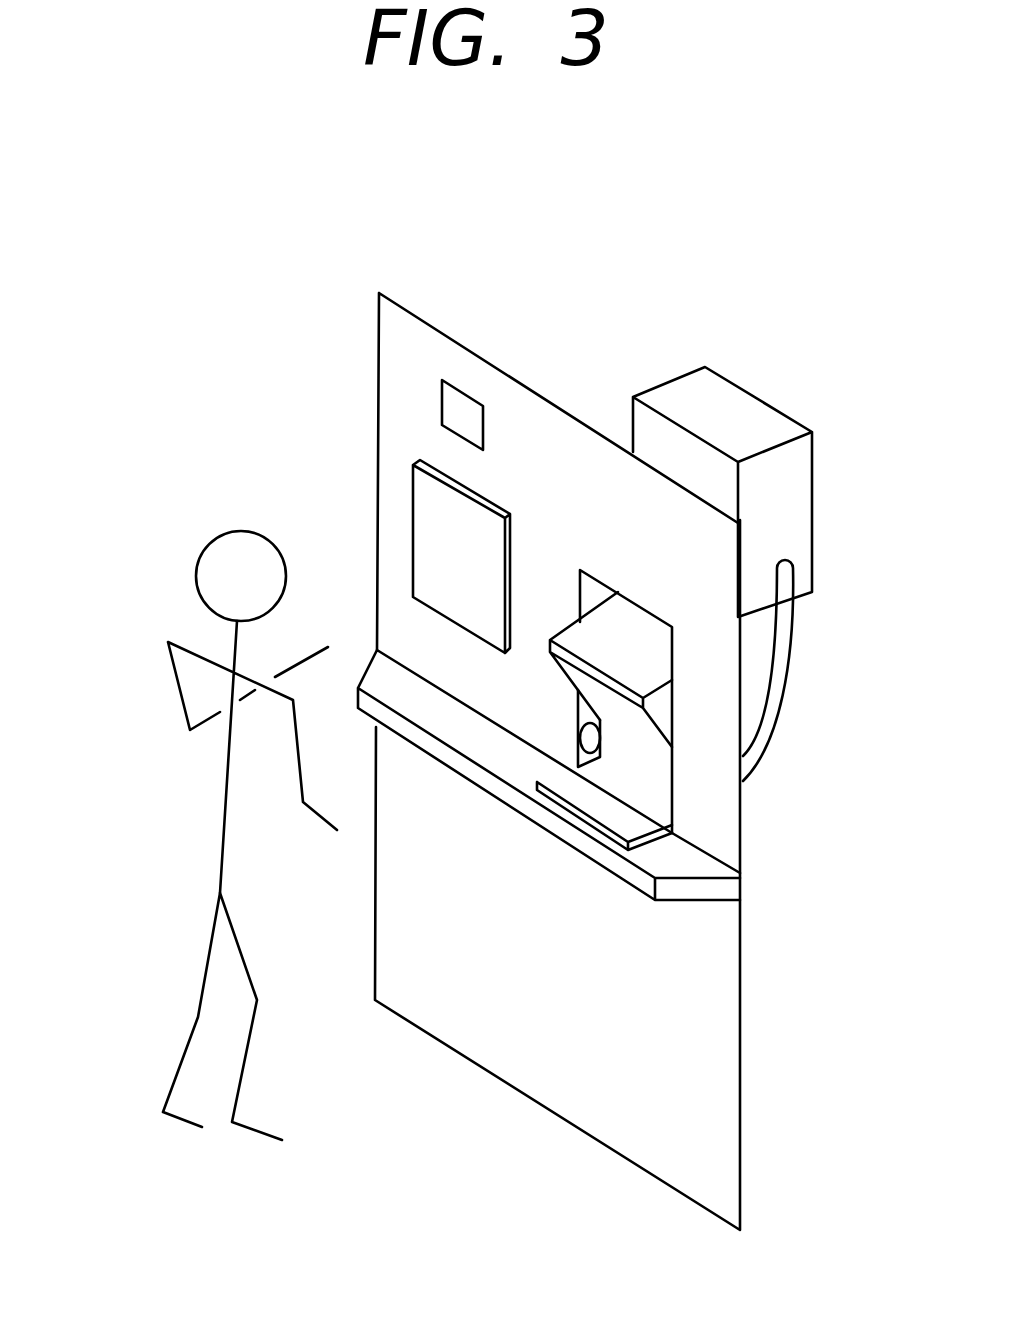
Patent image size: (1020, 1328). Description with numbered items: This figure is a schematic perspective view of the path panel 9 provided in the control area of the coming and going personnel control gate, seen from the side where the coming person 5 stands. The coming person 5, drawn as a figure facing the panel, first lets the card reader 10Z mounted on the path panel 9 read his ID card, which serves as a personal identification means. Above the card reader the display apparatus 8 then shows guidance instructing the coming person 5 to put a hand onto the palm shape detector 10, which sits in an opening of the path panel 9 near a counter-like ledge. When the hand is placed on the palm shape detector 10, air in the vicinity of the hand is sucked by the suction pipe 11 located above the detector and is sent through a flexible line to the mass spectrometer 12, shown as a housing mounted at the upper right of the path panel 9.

The coming person 5 is at (223, 807).
The display apparatus 8 is at (453, 403).
The path panel 9 is at (742, 1012).
The palm shape detector 10 is at (613, 805).
The card reader 10Z is at (442, 533).
The suction pipe 11 is at (647, 735).
The mass spectrometer 12 is at (737, 418).